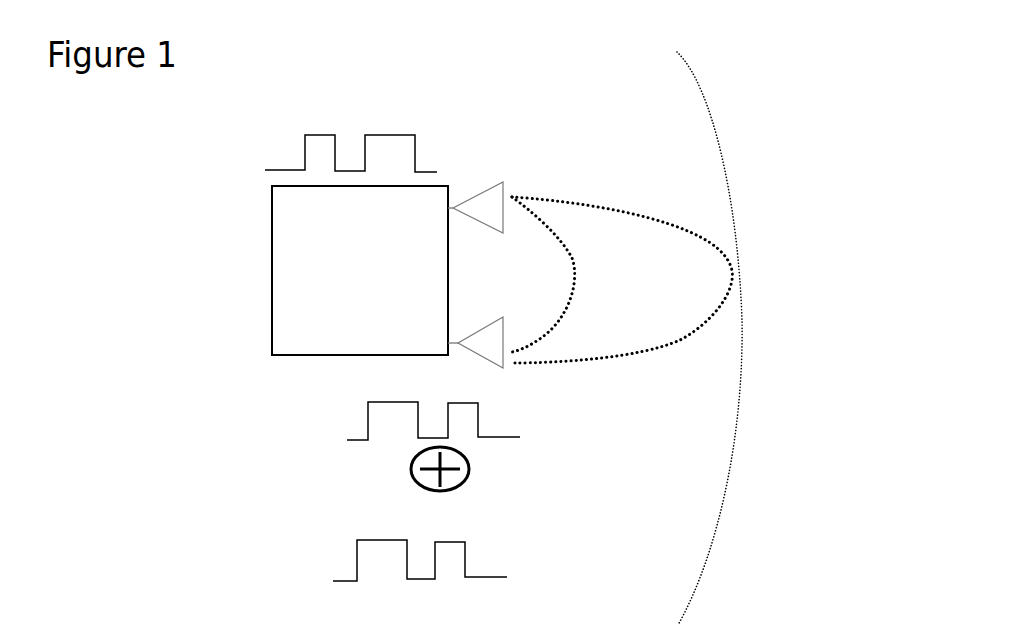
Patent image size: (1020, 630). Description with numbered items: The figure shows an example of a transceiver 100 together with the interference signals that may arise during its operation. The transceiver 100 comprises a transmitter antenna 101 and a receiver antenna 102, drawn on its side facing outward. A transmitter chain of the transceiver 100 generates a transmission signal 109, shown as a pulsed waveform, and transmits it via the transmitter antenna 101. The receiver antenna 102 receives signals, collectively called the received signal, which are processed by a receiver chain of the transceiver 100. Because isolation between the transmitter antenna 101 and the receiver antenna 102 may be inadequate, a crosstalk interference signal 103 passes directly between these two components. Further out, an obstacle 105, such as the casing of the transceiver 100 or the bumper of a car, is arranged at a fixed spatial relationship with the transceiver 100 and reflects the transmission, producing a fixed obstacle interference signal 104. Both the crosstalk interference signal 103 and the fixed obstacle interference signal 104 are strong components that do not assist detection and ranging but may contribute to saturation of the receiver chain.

The transceiver 100 is at (272, 250).
The transmitter antenna 101 is at (490, 186).
The receiver antenna 102 is at (490, 362).
The crosstalk interference signal 103 is at (368, 420).
The fixed obstacle interference signal 104 is at (357, 557).
The obstacle 105 is at (710, 88).
The transmission signal 109 is at (333, 135).